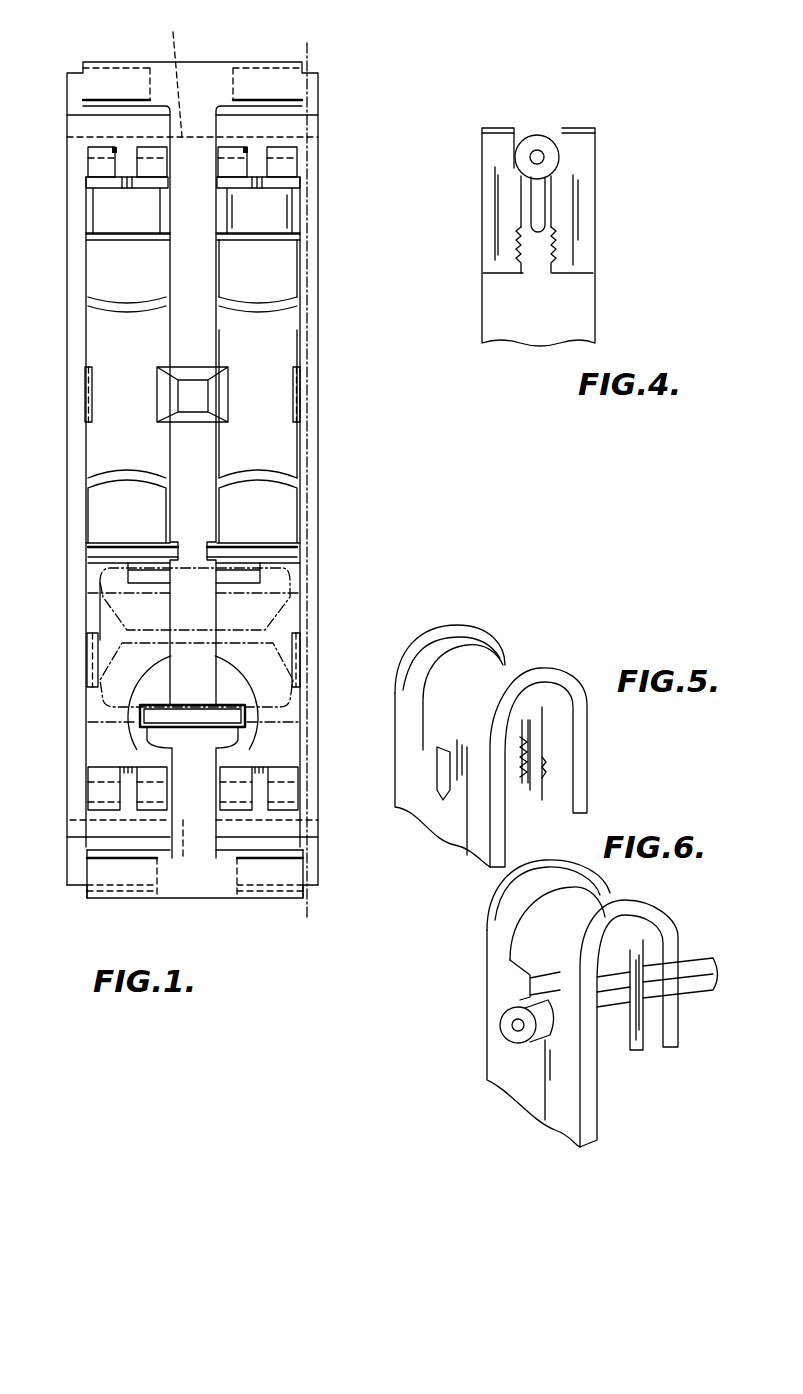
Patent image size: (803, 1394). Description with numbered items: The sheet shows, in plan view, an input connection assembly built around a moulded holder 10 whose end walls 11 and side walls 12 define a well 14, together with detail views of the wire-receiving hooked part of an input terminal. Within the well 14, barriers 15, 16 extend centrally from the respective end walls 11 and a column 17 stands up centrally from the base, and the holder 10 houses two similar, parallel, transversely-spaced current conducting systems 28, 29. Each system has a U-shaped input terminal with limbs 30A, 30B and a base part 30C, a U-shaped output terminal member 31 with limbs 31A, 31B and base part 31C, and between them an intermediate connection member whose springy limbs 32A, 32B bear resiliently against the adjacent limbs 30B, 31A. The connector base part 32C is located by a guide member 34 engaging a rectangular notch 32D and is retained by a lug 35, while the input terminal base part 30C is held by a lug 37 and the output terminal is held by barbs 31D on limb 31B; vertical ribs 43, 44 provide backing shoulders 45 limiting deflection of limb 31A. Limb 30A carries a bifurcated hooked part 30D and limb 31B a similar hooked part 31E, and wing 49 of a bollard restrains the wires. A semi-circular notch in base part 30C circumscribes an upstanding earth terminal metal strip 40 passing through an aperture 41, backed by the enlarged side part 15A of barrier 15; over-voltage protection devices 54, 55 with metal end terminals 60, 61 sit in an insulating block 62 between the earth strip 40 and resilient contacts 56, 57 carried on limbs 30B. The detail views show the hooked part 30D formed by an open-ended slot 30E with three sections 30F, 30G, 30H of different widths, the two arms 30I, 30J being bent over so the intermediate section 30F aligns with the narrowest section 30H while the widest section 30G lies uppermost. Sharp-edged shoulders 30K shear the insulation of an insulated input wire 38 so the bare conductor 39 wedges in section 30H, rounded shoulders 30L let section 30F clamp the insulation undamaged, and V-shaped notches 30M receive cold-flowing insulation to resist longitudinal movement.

In FIG. 1, the holder 10 is at (322, 165).
In FIG. 1, the end walls 11 is at (175, 450).
In FIG. 1, the side walls 12 is at (76, 352).
In FIG. 1, the well 14 is at (110, 445).
In FIG. 1, the barrier 15 is at (183, 765).
In FIG. 1, the vertical side part 15A is at (243, 732).
In FIG. 1, the barrier 16 is at (193, 288).
In FIG. 1, the column 17 is at (188, 500).
In FIG. 1, the current conducting system 28 is at (80, 508).
In FIG. 1, the current conducting system 29 is at (307, 520).
In FIG. 1, the limb 30A is at (283, 763).
In FIG. 4, the limb 30A is at (573, 327).
In FIG. 5, the limb 30A is at (488, 866).
In FIG. 1, the limb 30B is at (290, 552).
In FIG. 1, the base part 30C is at (287, 737).
In FIG. 1, the bifurcated hooked part 30D is at (287, 812).
In FIG. 4, the bifurcated hooked part 30D is at (604, 127).
In FIG. 5, the bifurcated hooked part 30D is at (444, 615).
In FIG. 1, the open-ended slot 30E is at (243, 683).
In FIG. 5, the open-ended slot 30E is at (532, 798).
In FIG. 4, the slot section 30F is at (570, 262).
In FIG. 5, the slot section 30F is at (545, 736).
In FIG. 4, the slot section 30G is at (520, 121).
In FIG. 5, the slot section 30G is at (467, 686).
In FIG. 4, the slot section 30H is at (556, 210).
In FIG. 5, the slot section 30H is at (443, 812).
In FIG. 5, the arm 30I is at (457, 640).
In FIG. 5, the arm 30J is at (533, 670).
In FIG. 4, the sharp-edged shoulders 30K is at (548, 187).
In FIG. 5, the sharp-edged shoulders 30K is at (447, 757).
In FIG. 4, the rounded shoulders 30L is at (517, 183).
In FIG. 5, the rounded shoulders 30L is at (550, 715).
In FIG. 4, the V-shaped notches 30M is at (517, 258).
In FIG. 5, the V-shaped notches 30M is at (550, 787).
In FIG. 1, the output terminal member 31 is at (298, 199).
In FIG. 1, the limb 31A is at (228, 237).
In FIG. 1, the limb 31B is at (248, 190).
In FIG. 1, the base part 31C is at (267, 227).
In FIG. 1, the barbs 31D is at (220, 180).
In FIG. 1, the bifurcated hooked part 31E is at (278, 147).
In FIG. 1, the limb 32A is at (268, 470).
In FIG. 1, the limb 32B is at (277, 316).
In FIG. 1, the base part 32C is at (280, 358).
In FIG. 1, the rectangular notch 32D is at (223, 365).
In FIG. 1, the guide member 34 is at (227, 392).
In FIG. 1, the lug 35 is at (292, 408).
In FIG. 1, the lug 37 is at (298, 650).
In FIG. 4, the insulated input wire conductor end 38 is at (545, 137).
In FIG. 6, the insulated input wire conductor end 38 is at (692, 950).
In FIG. 4, the input wire conductor 39 is at (530, 157).
In FIG. 6, the input wire conductor 39 is at (513, 1023).
In FIG. 1, the earth terminal metal strip 40 is at (167, 716).
In FIG. 1, the aperture 41 is at (142, 713).
In FIG. 1, the vertical rib 43 is at (308, 228).
In FIG. 1, the vertical rib 44 is at (172, 214).
In FIG. 1, the backing shoulders 45 is at (220, 225).
In FIG. 1, the wing 49 is at (223, 124).
In FIG. 1, the over-voltage protection device 54 is at (42, 575).
In FIG. 1, the over-voltage protection device 55 is at (92, 585).
In FIG. 1, the resilient contact 56 is at (259, 583).
In FIG. 1, the resilient contact 57 is at (138, 582).
In FIG. 1, the metal end terminal 60 is at (297, 703).
In FIG. 1, the metal end terminal 61 is at (273, 570).
In FIG. 1, the block 62 is at (296, 584).